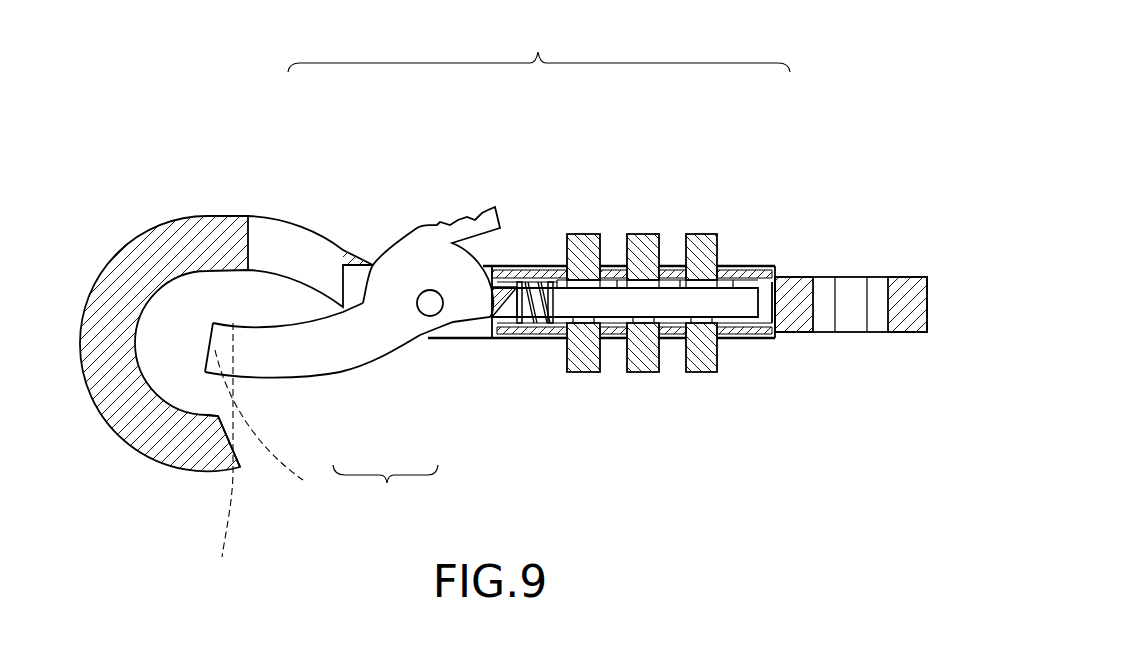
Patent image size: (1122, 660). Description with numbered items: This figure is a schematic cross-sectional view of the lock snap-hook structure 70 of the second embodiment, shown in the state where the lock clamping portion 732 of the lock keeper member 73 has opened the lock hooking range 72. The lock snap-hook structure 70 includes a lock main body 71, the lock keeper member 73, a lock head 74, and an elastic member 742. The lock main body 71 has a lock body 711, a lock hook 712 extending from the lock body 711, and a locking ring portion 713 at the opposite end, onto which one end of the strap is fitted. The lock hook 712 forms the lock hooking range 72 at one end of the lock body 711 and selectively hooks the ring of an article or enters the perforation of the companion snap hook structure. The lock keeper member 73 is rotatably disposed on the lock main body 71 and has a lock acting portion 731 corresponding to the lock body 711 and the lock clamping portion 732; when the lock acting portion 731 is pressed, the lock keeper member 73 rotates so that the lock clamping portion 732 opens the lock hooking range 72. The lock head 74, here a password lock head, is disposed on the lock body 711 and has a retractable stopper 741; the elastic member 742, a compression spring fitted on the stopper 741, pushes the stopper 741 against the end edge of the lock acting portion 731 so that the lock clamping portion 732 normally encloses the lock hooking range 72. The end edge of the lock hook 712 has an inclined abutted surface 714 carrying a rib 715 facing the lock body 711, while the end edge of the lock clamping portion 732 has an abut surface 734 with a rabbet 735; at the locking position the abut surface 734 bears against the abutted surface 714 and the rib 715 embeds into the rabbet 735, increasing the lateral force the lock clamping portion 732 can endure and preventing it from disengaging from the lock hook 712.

The lock snap-hook structure 70 is at (874, 24).
The lock main body 71 is at (539, 50).
The lock body 711 is at (528, 277).
The lock hook 712 is at (204, 220).
The locking ring portion 713 is at (797, 280).
The abutted surface 714 is at (237, 447).
The rib 715 is at (222, 451).
The lock hooking range 72 is at (180, 305).
The lock keeper member 73 is at (385, 487).
The lock acting portion 731 is at (470, 227).
The lock clamping portion 732 is at (318, 355).
The abut surface 734 is at (207, 353).
The rabbet 735 is at (269, 427).
The lock head 74 is at (587, 372).
The stopper 741 is at (508, 310).
The elastic member 742 is at (553, 320).